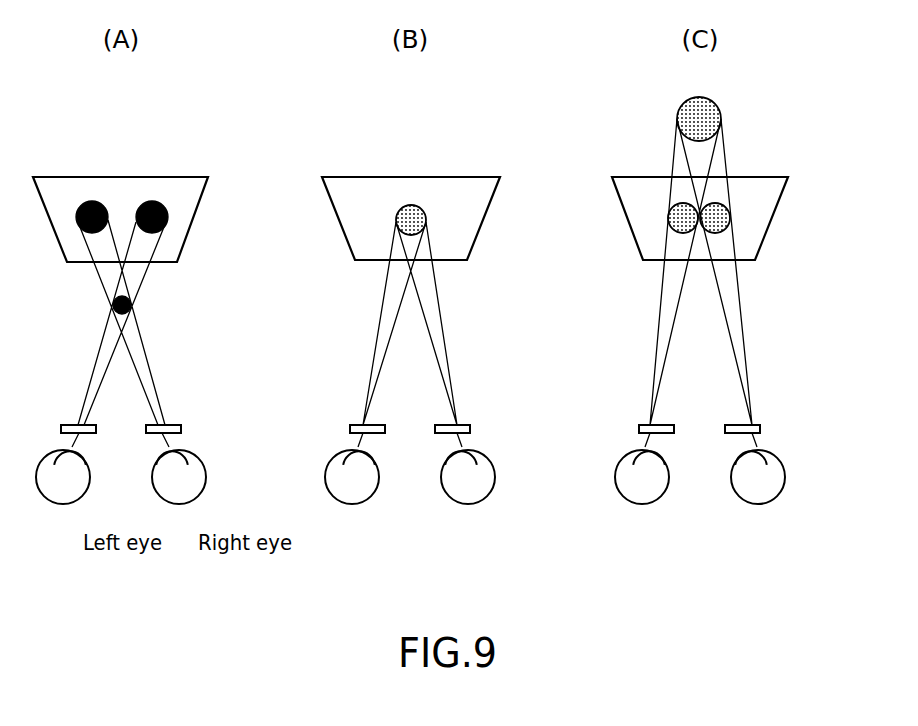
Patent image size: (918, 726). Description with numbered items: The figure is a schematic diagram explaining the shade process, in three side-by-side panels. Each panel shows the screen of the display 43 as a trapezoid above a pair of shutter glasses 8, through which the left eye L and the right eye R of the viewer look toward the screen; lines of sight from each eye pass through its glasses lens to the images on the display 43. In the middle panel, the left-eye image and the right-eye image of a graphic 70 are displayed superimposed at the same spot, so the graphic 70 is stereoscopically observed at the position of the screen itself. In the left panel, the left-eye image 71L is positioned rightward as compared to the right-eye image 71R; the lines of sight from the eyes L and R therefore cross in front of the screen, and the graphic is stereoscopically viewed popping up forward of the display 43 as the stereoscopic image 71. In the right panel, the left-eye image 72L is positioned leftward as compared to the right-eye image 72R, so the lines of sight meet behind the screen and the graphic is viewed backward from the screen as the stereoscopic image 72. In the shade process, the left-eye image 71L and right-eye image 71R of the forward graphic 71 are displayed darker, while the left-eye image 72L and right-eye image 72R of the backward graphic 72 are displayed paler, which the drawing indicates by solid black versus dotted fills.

The display 43 is at (183, 243).
The right-eye image of the graphic observed forward 71R is at (93, 201).
The left-eye image of the graphic observed forward 71L is at (153, 201).
The stereoscopic image of the graphic observed forward 71 is at (131, 304).
The shutter glasses 8 is at (176, 424).
The left eye L is at (63, 504).
The right eye R is at (179, 504).
The graphic observed at the screen position 70 is at (411, 205).
The stereoscopic image of the graphic observed backward 72 is at (721, 113).
The left-eye image of the graphic observed backward 72L is at (680, 217).
The right-eye image of the graphic observed backward 72R is at (718, 217).